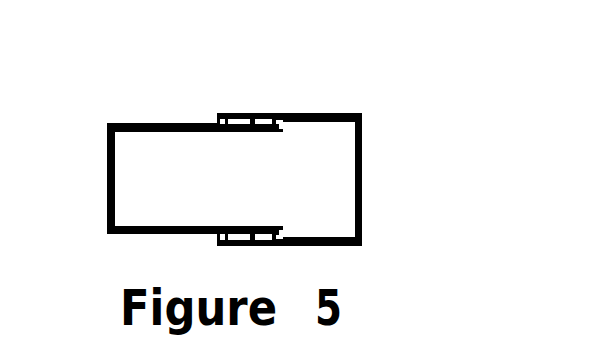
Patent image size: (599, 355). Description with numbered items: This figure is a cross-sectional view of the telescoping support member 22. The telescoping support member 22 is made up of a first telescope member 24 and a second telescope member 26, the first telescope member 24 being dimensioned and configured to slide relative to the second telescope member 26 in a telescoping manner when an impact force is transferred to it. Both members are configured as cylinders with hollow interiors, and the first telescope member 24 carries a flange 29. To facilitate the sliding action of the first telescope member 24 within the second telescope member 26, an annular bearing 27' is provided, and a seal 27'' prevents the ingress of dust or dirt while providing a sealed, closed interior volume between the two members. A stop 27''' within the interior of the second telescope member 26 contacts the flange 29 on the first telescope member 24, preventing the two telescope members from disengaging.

The telescoping support member 22 is at (313, 165).
The first telescope member 24 is at (105, 147).
The second telescope member 26 is at (362, 220).
The annular bearing 27' is at (219, 130).
The seal 27'' is at (269, 143).
The stop 27''' is at (322, 132).
The flange 29 is at (303, 112).